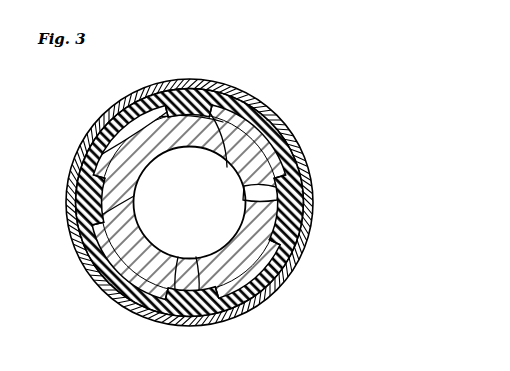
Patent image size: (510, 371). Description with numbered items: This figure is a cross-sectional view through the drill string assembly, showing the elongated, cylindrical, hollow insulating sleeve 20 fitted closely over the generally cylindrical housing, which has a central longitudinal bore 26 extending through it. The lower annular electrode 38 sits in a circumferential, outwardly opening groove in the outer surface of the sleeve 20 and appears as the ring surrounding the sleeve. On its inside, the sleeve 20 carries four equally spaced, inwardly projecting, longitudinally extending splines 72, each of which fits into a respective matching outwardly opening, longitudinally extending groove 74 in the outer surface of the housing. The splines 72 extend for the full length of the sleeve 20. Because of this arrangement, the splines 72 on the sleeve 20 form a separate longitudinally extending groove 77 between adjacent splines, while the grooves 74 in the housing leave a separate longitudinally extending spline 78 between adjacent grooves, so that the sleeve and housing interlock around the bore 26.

The sleeve 20 is at (273, 122).
The central longitudinal bore 26 is at (150, 170).
The lower annular electrode 38 is at (78, 201).
The splines 72 is at (230, 190).
The grooves 74 is at (108, 134).
The groove 77 is at (154, 90).
The spline 78 is at (237, 86).